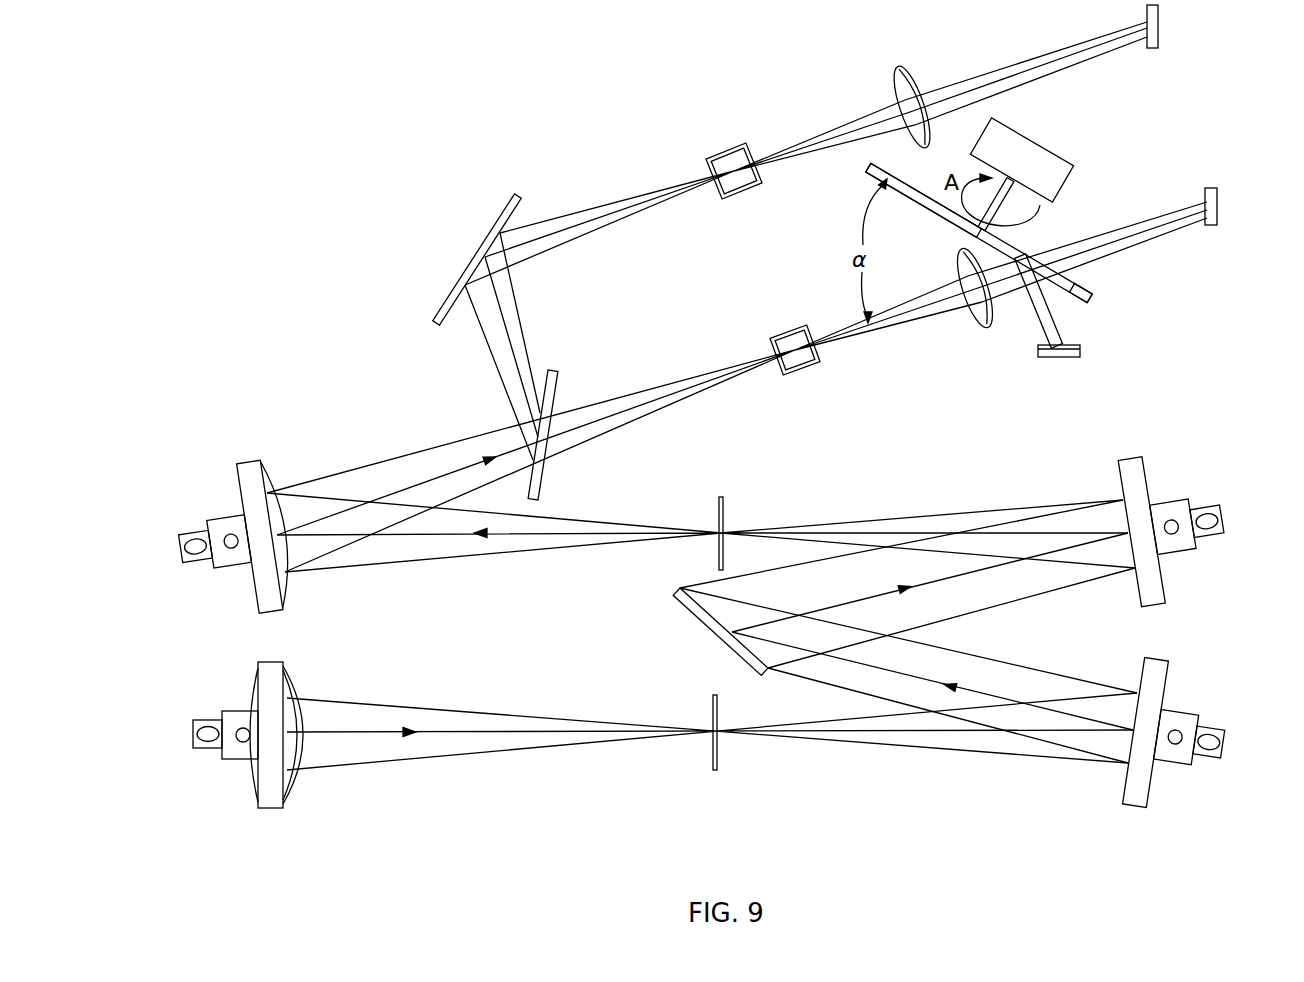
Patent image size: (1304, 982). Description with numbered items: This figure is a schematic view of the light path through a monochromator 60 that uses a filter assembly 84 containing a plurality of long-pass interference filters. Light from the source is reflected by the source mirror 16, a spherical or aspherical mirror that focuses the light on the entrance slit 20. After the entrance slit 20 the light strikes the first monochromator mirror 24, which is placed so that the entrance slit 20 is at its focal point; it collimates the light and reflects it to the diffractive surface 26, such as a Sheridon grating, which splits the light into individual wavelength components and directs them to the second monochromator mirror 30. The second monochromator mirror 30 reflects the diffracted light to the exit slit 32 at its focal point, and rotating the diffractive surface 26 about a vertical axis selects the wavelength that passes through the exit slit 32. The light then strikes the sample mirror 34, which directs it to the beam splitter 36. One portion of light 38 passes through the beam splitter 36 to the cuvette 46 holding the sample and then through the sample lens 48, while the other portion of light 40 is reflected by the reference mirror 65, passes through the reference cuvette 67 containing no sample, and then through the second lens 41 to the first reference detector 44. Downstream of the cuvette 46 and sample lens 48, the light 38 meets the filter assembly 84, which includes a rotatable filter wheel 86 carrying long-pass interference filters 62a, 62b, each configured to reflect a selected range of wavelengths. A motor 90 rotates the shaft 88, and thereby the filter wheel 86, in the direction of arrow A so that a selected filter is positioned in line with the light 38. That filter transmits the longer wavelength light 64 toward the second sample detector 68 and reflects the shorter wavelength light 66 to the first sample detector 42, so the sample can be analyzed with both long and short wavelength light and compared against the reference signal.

The source mirror 16 is at (272, 803).
The entrance slit 20 is at (718, 772).
The first monochromator mirror 24 is at (1148, 805).
The diffractive surface 26 is at (692, 612).
The second monochromator mirror 30 is at (1143, 475).
The exit slit 32 is at (723, 503).
The sample mirror 34 is at (243, 466).
The beam splitter 36 is at (555, 370).
The light 38 is at (706, 384).
The light 40 is at (606, 226).
The second lens 41 is at (892, 88).
The first sample detector 42 is at (1080, 356).
The first reference detector 44 is at (1158, 48).
The cuvette 46 is at (768, 336).
The sample lens 48 is at (978, 330).
The monochromator 60 is at (267, 175).
The long-pass interference filter 62a is at (1030, 252).
The long-pass interference filter 62b is at (872, 180).
The longer wavelength light 64 is at (1183, 228).
The reference mirror 65 is at (434, 316).
The shorter wavelength light 66 is at (1038, 318).
The reference cuvette 67 is at (713, 155).
The second sample detector 68 is at (1217, 225).
The filter assembly 84 is at (1118, 158).
The rotatable filter wheel 86 is at (1092, 300).
The shaft 88 is at (972, 232).
The motor 90 is at (1044, 141).